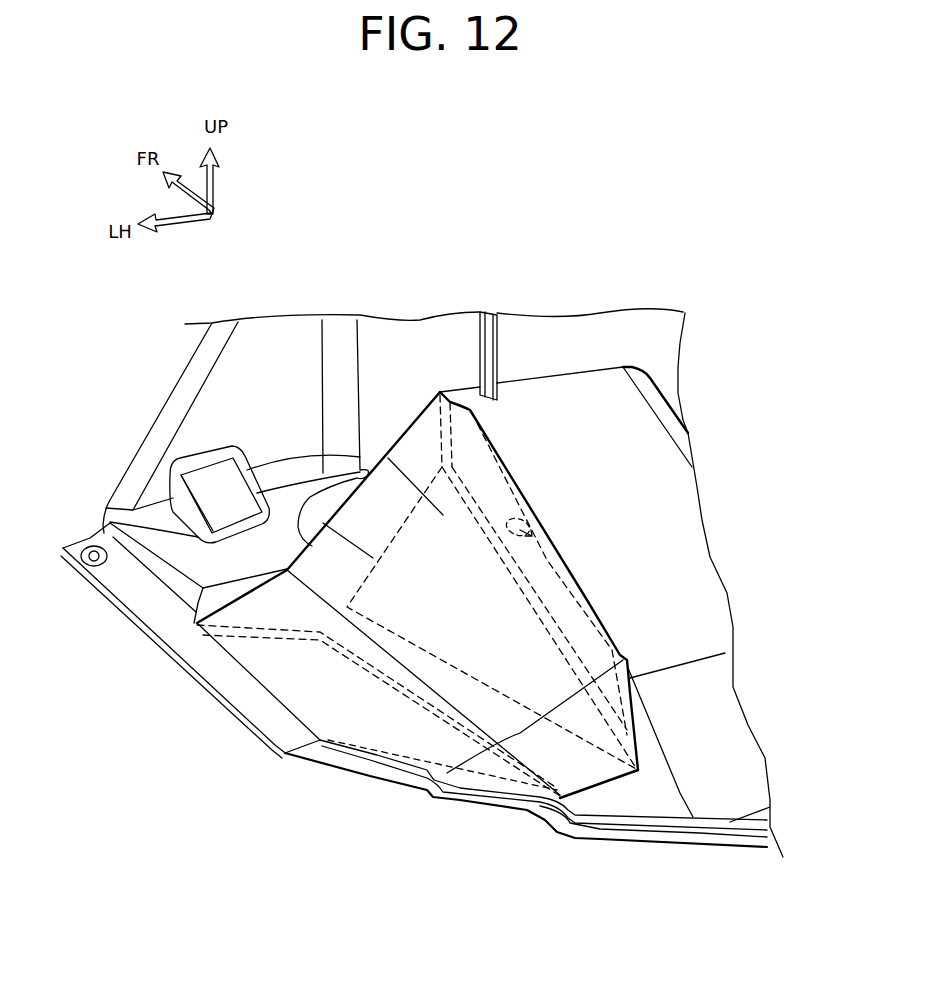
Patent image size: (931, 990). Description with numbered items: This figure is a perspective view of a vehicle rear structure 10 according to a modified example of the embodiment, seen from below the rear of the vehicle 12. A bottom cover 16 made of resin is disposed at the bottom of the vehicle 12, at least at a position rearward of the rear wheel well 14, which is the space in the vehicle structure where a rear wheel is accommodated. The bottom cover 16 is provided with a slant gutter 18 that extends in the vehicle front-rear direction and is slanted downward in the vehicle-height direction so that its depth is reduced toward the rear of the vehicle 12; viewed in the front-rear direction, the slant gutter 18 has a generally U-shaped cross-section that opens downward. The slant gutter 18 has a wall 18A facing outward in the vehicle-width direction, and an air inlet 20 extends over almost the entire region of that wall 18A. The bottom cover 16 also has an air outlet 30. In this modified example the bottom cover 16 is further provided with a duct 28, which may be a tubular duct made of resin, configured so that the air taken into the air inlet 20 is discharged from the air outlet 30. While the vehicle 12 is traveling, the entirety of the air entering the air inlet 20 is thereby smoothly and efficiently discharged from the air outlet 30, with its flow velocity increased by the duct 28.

The vehicle rear structure 10 is at (257, 771).
The vehicle 12 is at (748, 848).
The rear wheel well 14 is at (160, 420).
The bottom cover 16 is at (157, 617).
The slant gutter 18 is at (640, 567).
The wall of the slant gutter 18A is at (651, 767).
The air inlet 20 is at (520, 517).
The duct 28 is at (460, 627).
The air outlet 30 is at (311, 710).